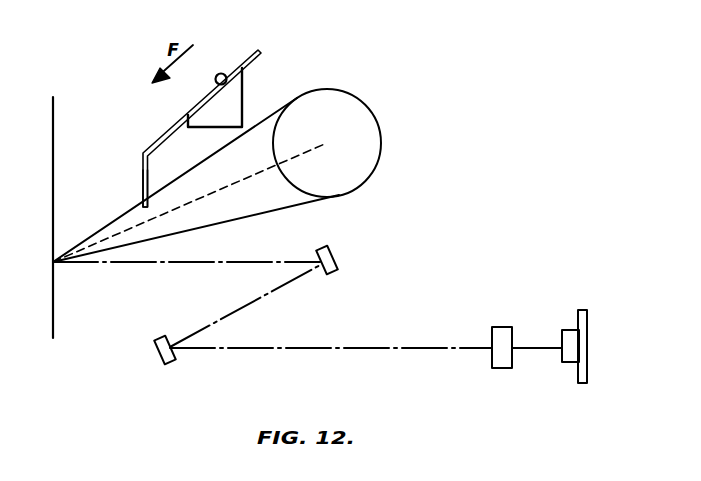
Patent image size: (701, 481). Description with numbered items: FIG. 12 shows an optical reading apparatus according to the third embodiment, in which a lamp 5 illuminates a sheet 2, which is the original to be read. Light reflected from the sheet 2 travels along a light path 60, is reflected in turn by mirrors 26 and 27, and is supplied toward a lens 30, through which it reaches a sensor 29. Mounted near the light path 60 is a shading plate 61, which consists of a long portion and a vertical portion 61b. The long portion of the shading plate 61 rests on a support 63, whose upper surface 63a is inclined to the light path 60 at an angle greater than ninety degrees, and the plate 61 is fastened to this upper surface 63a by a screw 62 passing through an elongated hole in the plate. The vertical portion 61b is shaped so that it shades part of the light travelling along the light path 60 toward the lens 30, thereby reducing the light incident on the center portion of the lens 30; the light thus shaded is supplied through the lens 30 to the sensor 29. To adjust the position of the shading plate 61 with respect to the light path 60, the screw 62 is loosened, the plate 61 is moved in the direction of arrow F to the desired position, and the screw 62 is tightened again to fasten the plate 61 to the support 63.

The sheet 2 is at (55, 145).
The lamp 5 is at (342, 110).
The mirror 26 is at (337, 255).
The mirror 27 is at (168, 361).
The sensor 29 is at (583, 384).
The lens 30 is at (501, 368).
The light path 60 is at (263, 196).
The shading plate 61 is at (165, 132).
The vertical portion 61b is at (142, 180).
The screw 62 is at (221, 73).
The support 63 is at (243, 91).
The upper surface 63a is at (205, 106).